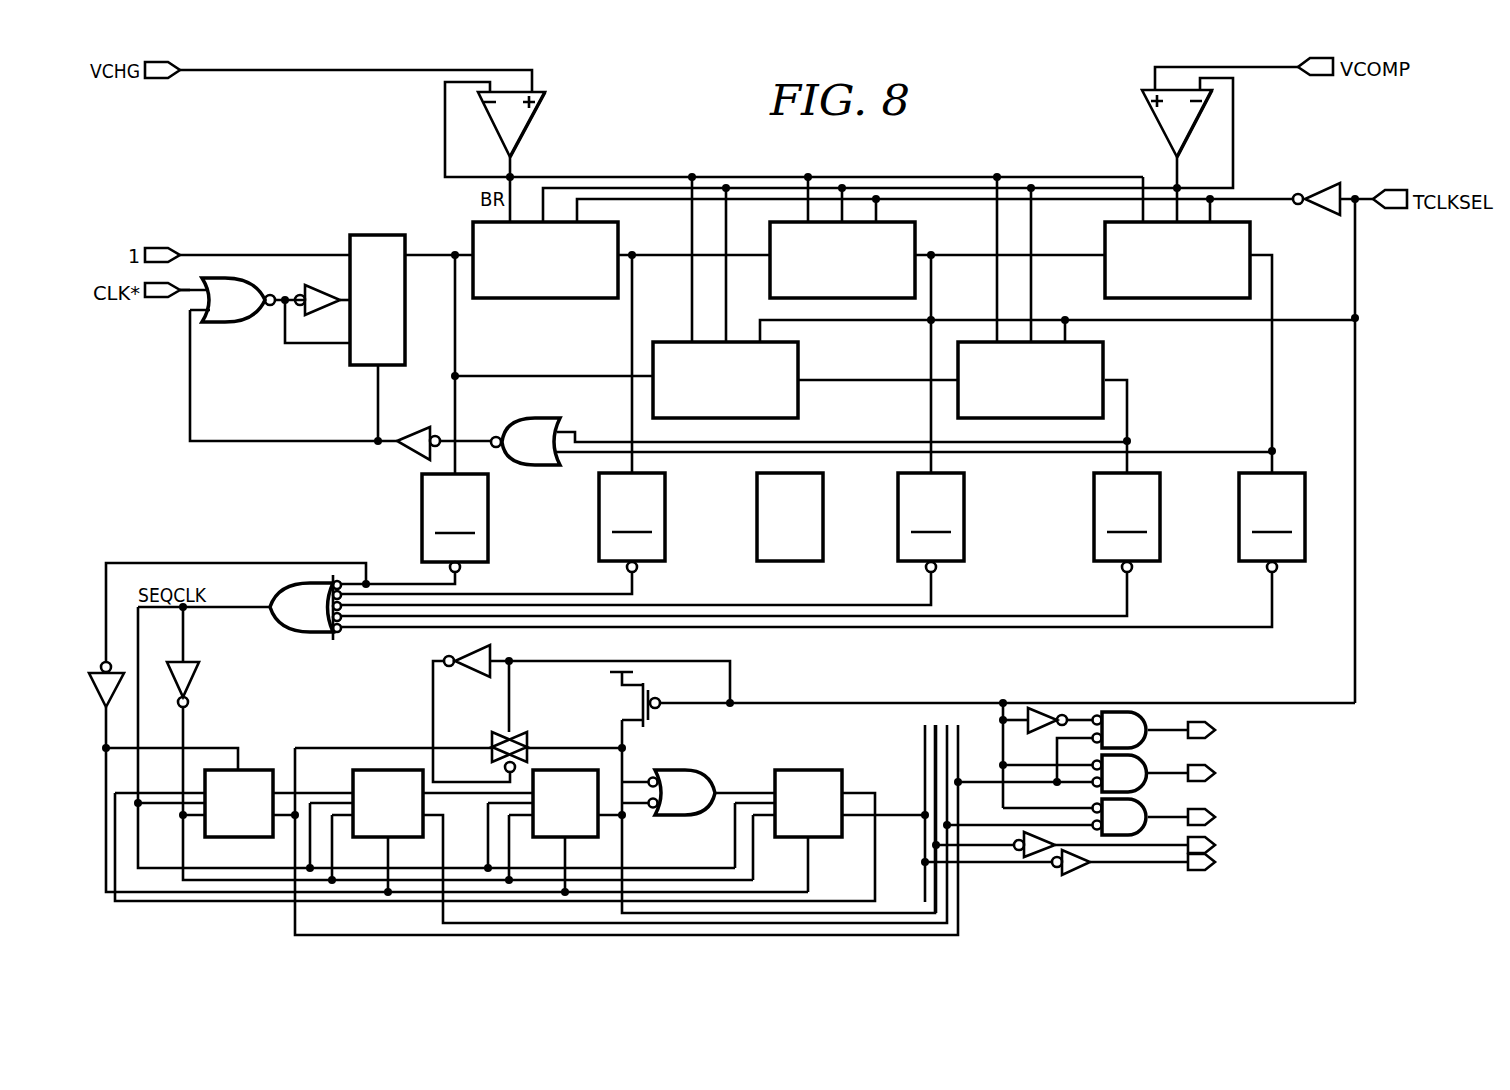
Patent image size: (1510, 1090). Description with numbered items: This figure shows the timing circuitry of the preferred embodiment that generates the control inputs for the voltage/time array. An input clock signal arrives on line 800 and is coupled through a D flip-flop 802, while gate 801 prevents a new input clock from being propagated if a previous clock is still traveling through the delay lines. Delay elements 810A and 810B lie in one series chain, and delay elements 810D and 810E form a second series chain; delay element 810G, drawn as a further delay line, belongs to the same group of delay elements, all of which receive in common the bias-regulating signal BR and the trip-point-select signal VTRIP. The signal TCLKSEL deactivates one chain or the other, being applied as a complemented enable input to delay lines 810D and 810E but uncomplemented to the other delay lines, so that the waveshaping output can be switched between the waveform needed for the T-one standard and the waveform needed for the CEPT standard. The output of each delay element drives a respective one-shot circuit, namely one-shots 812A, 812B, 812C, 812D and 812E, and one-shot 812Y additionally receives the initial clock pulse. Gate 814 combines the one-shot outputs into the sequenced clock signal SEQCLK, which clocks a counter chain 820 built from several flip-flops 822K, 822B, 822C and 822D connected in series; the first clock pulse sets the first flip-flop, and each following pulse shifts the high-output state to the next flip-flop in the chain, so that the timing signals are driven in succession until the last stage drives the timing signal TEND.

The line 800 is at (184, 298).
The gate 801 is at (232, 323).
The D flip-flop 802 is at (370, 235).
The delay element 810A is at (473, 222).
The delay element 810B is at (915, 236).
The delay element 810D is at (798, 346).
The delay element 810E is at (1105, 348).
The delay element 810G is at (1250, 235).
The one-shot circuit 812Y is at (422, 528).
The one-shot circuit 812A is at (665, 540).
The one-shot circuit 812D is at (823, 540).
The one-shot circuit 812B is at (964, 540).
The one-shot circuit 812E is at (1094, 495).
The one-shot circuit 812C is at (1239, 548).
The gate 814 is at (300, 630).
The counter chain 820 is at (760, 799).
The flip-flop 822K is at (232, 828).
The flip-flop 822B is at (392, 772).
The flip-flop 822C is at (566, 772).
The flip-flop 822D is at (810, 772).